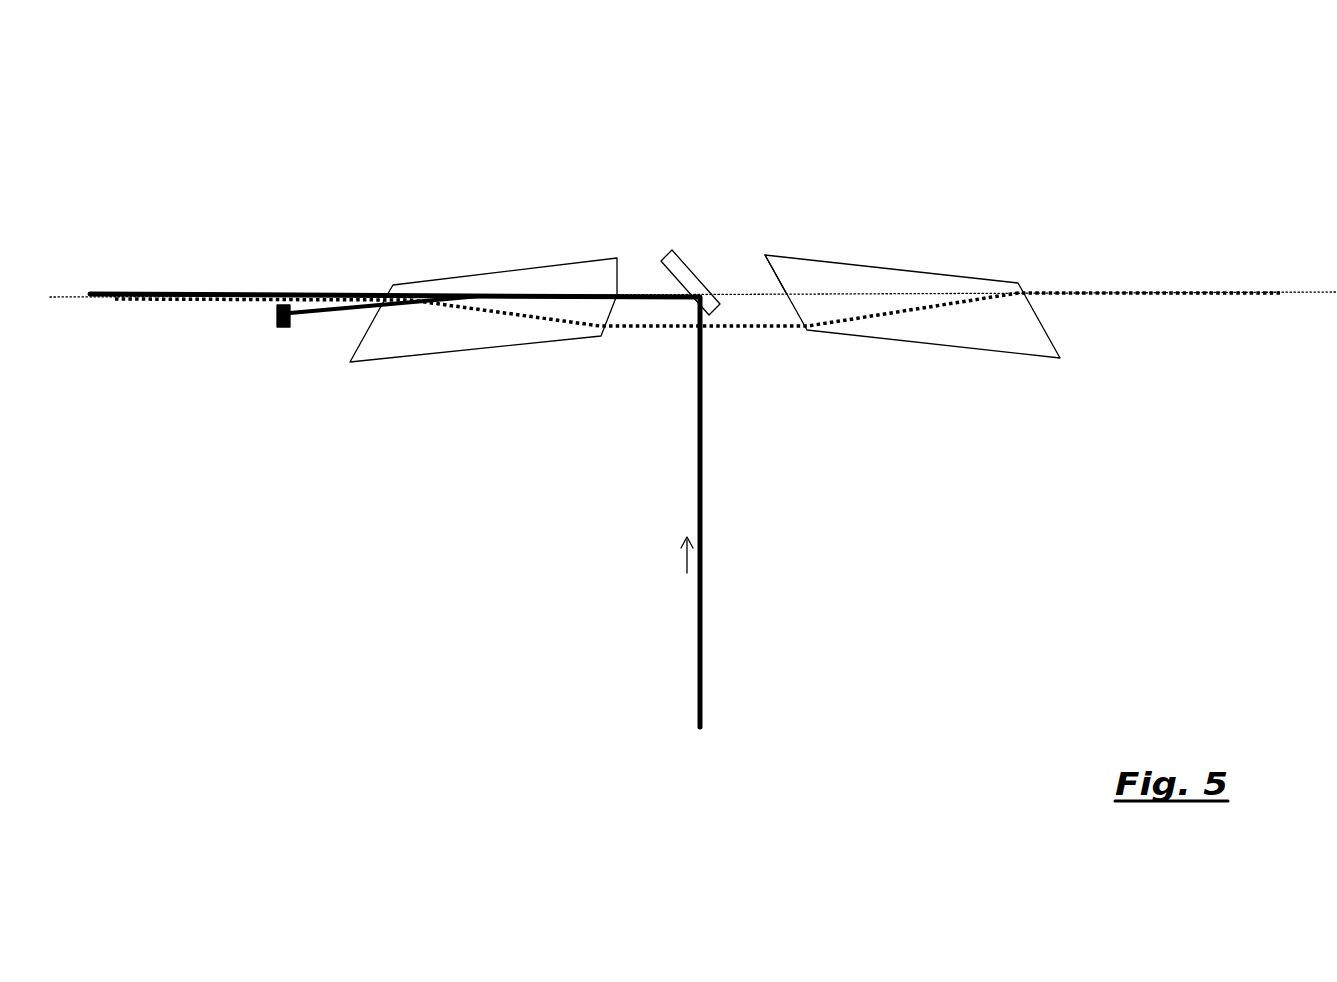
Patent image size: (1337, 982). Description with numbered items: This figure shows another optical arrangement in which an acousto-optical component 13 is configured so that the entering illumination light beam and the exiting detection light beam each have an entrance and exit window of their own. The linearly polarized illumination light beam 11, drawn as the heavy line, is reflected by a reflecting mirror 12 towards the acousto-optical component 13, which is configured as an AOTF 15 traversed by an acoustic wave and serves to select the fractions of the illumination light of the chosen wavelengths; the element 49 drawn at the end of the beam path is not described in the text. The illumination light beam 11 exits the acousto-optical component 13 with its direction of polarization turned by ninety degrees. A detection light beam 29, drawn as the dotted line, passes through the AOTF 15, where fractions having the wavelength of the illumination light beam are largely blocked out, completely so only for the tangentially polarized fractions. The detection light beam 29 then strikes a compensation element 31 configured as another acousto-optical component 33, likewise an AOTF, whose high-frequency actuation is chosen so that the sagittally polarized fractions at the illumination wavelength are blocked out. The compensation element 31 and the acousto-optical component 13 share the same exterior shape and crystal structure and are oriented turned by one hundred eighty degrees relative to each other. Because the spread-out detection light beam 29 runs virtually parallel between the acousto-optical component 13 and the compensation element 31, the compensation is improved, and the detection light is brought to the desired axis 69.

The illumination light beam 11 is at (227, 292).
The reflecting mirror 12 is at (673, 250).
The acousto-optical component 13 is at (475, 232).
The AOTF 15 is at (510, 270).
The detection light beam 29 is at (158, 302).
The compensation element 31 is at (889, 274).
The other acousto-optical component 33 is at (889, 333).
The stop block 49 is at (277, 325).
The desired axis 69 is at (717, 287).